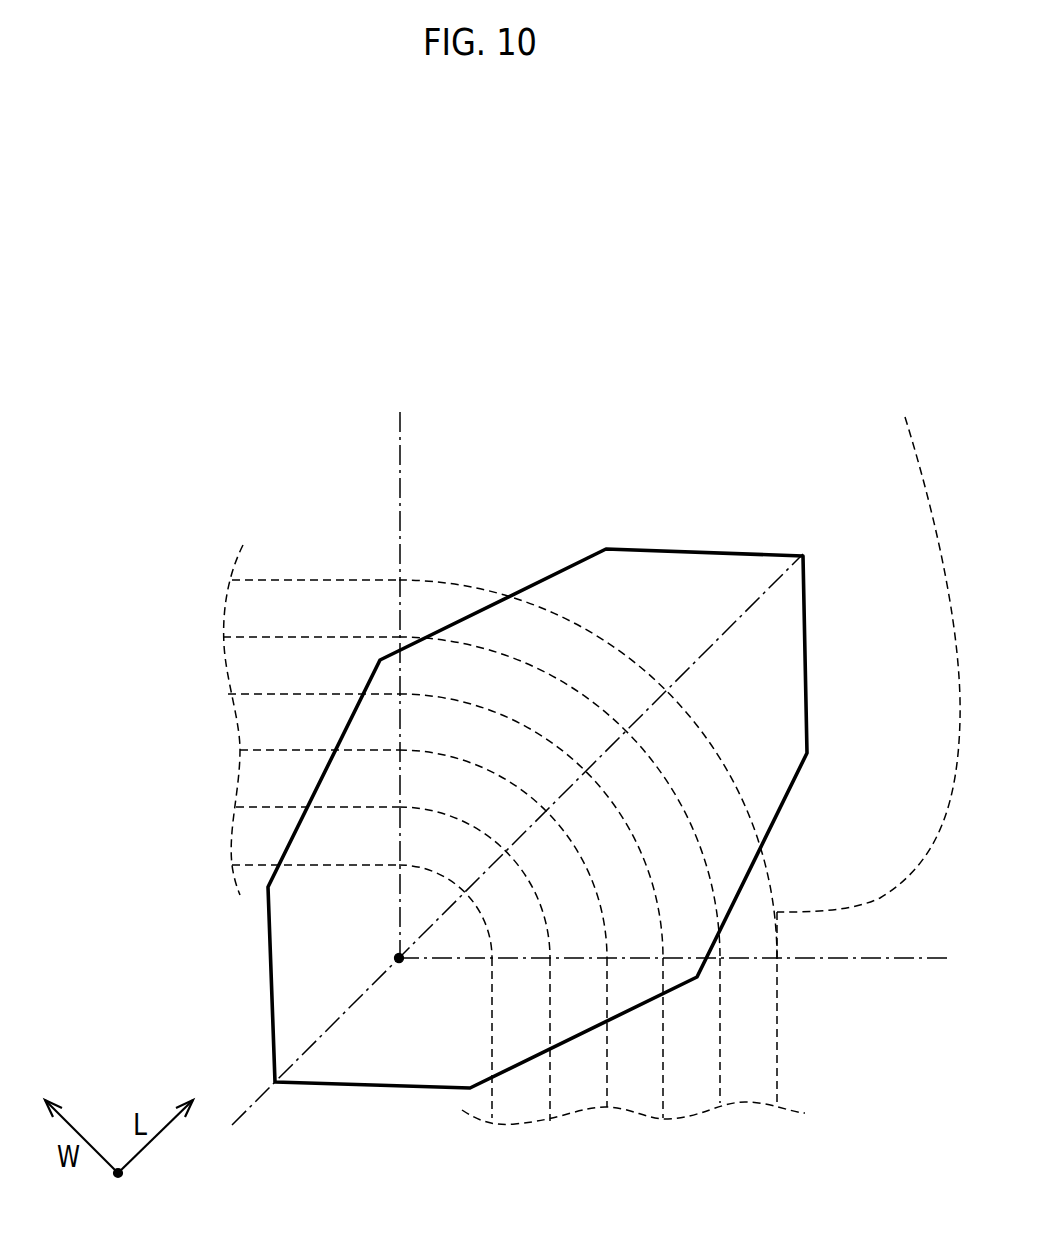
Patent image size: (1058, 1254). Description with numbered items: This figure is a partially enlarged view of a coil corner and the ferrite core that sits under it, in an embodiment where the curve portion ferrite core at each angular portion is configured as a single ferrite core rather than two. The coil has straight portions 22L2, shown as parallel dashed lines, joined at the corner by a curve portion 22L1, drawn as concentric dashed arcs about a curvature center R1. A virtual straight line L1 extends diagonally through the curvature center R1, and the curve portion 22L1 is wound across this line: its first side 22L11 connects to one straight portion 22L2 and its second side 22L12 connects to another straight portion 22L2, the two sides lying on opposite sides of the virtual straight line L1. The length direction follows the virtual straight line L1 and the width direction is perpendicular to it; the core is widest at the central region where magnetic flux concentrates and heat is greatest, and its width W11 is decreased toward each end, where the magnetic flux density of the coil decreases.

The curve portion 22L1 is at (953, 390).
The first side 22L11 is at (535, 606).
The second side 22L12 is at (868, 648).
The straight portion 22L2 is at (263, 578).
The virtual straight line L1 is at (807, 548).
The width W11 is at (392, 826).
The curvature center R1 is at (400, 960).